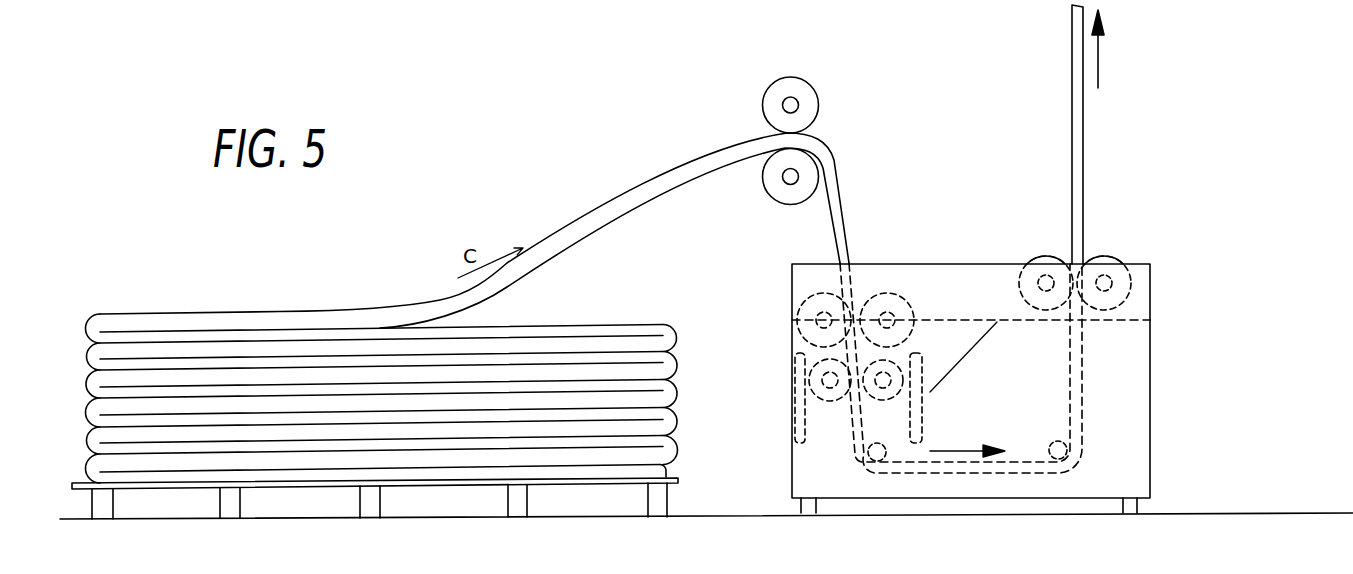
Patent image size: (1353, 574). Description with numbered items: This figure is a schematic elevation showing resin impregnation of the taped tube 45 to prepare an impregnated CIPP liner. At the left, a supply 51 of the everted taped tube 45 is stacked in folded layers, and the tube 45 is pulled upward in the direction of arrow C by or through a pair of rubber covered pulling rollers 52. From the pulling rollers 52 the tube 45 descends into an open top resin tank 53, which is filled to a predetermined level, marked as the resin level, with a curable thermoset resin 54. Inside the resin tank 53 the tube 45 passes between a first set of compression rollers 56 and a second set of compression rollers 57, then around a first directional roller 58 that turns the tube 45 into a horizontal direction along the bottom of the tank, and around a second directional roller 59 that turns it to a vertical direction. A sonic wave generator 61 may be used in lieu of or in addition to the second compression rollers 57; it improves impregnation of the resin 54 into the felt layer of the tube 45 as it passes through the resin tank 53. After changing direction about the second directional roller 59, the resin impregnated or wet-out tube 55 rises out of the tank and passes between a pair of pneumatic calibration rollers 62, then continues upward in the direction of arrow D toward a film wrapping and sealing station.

The taped tube 45 is at (587, 217).
The supply 51 is at (180, 291).
The pulling rollers 52 is at (770, 84).
The resin tank 53 is at (1150, 395).
The curable thermoset resin 54 is at (1125, 385).
The impregnated tube 55 is at (1072, 36).
The first set of compression rollers 56 is at (813, 295).
The second set of compression rollers 57 is at (797, 350).
The first directional roller 58 is at (846, 462).
The second directional roller 59 is at (1053, 456).
The sonic wave generator 61 is at (797, 443).
The pneumatic calibration rollers 62 is at (1048, 256).